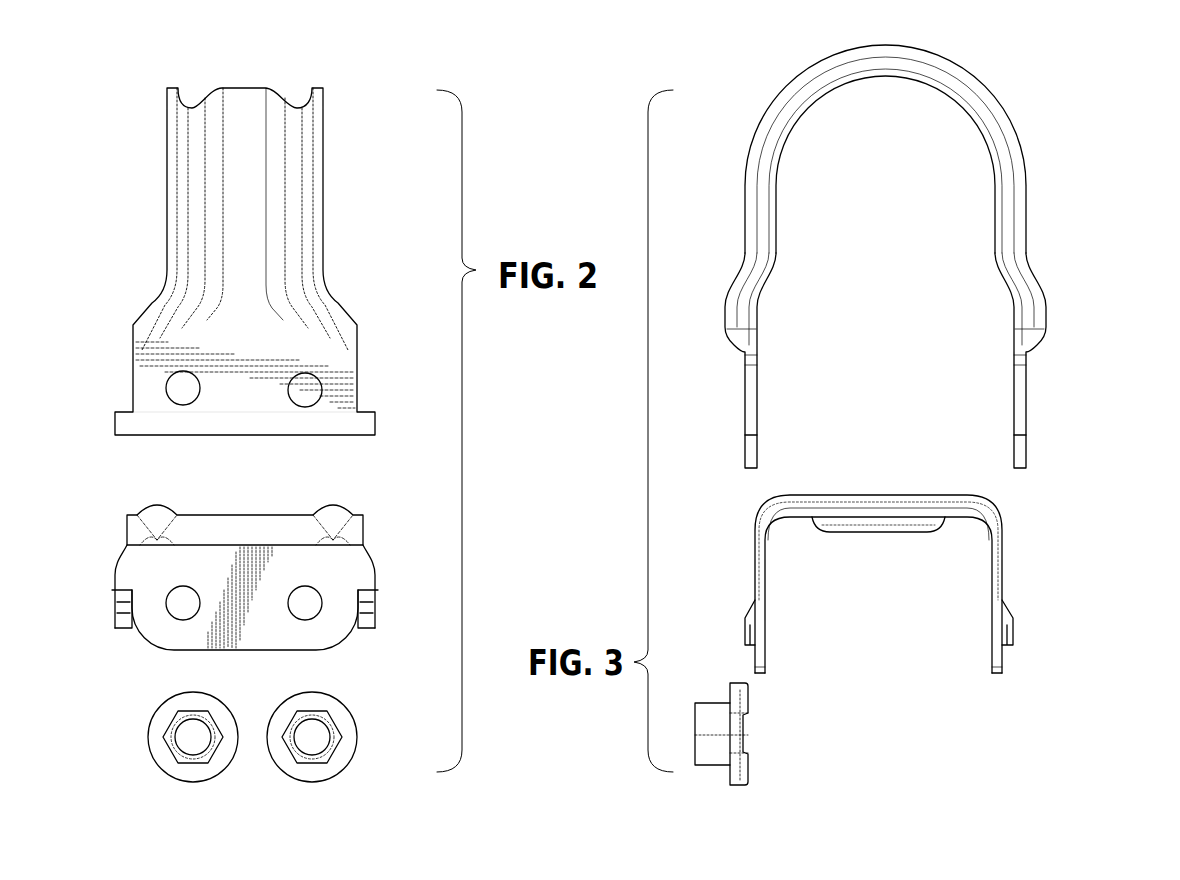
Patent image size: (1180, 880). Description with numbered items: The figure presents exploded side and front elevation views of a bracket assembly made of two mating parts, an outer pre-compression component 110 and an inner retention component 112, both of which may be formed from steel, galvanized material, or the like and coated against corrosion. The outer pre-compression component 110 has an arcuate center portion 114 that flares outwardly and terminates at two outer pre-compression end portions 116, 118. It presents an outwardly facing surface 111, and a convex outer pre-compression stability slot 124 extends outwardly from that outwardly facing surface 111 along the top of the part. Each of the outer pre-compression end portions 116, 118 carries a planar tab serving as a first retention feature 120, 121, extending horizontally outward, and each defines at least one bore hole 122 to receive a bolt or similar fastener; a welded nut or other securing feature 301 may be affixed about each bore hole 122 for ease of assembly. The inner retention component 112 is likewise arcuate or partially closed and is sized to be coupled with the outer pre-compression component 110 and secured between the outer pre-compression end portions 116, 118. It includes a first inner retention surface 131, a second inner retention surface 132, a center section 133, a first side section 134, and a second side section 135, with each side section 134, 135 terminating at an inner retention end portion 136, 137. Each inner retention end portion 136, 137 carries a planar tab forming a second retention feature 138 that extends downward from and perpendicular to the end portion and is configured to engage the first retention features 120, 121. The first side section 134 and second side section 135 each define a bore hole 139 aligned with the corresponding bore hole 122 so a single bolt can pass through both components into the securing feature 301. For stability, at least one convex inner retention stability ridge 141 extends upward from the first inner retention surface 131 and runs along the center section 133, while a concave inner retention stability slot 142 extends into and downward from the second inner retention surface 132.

In FIG. 2, the outer pre-compression component 110 is at (262, 268).
In FIG. 3, the outer pre-compression component 110 is at (885, 270).
In FIG. 2, the outwardly facing surface 111 is at (167, 222).
In FIG. 2, the inner retention component 112 is at (262, 576).
In FIG. 3, the inner retention component 112 is at (882, 579).
In FIG. 3, the center portion 114 is at (750, 103).
In FIG. 2, the outer pre-compression end portion 116 is at (140, 362).
In FIG. 3, the outer pre-compression end portion 116 is at (745, 415).
In FIG. 3, the outer pre-compression end portion 118 is at (1015, 395).
In FIG. 2, the first retention feature 120 is at (367, 422).
In FIG. 3, the first retention feature 120 is at (748, 452).
In FIG. 3, the first retention feature 121 is at (1020, 452).
In FIG. 2, the bore hole 122 is at (170, 395).
In FIG. 2, the convex outer pre-compression stability slot 124 is at (240, 96).
In FIG. 3, the first inner retention surface 131 is at (753, 562).
In FIG. 3, the second inner retention surface 132 is at (766, 592).
In FIG. 2, the center section 133 is at (262, 503).
In FIG. 3, the center section 133 is at (889, 486).
In FIG. 2, the first side section 134 is at (283, 618).
In FIG. 3, the first side section 134 is at (757, 598).
In FIG. 3, the second side section 135 is at (1003, 593).
In FIG. 2, the inner retention end portion 136 is at (232, 652).
In FIG. 3, the inner retention end portion 136 is at (766, 678).
In FIG. 3, the inner retention end portion 137 is at (1000, 678).
In FIG. 2, the second retention feature 138 is at (118, 632).
In FIG. 3, the second retention feature 138 is at (745, 632).
In FIG. 2, the bore hole 139 is at (180, 615).
In FIG. 2, the convex inner retention stability ridge 141 is at (158, 510).
In FIG. 3, the concave inner retention stability slot 142 is at (891, 535).
In FIG. 2, the securing feature 301 is at (155, 742).
In FIG. 3, the securing feature 301 is at (748, 737).